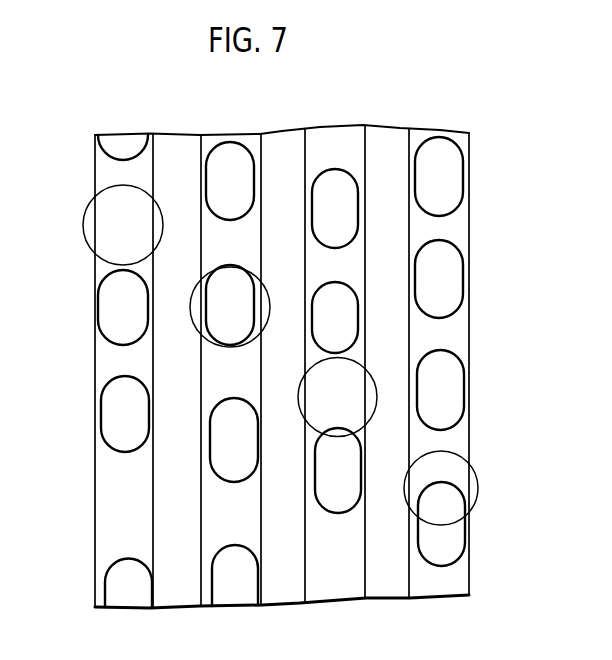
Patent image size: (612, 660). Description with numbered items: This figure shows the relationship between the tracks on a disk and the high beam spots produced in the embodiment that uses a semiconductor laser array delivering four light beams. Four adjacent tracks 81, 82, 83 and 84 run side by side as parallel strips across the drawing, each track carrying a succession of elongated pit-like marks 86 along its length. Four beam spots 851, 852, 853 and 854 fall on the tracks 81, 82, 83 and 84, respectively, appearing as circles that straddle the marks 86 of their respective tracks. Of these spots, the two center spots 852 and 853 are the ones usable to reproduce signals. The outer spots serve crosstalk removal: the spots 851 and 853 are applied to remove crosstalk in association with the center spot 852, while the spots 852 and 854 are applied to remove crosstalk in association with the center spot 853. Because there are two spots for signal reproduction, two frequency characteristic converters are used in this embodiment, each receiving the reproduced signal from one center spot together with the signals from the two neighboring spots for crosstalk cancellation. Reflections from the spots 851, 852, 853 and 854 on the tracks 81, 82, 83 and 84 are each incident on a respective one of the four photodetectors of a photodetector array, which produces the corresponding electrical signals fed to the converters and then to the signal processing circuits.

The track 81 is at (110, 531).
The track 82 is at (213, 535).
The track 83 is at (344, 590).
The track 84 is at (443, 587).
The slots 86 is at (331, 168).
The spot 851 is at (83, 230).
The spot 852 is at (193, 327).
The spot 853 is at (377, 385).
The spot 854 is at (470, 463).